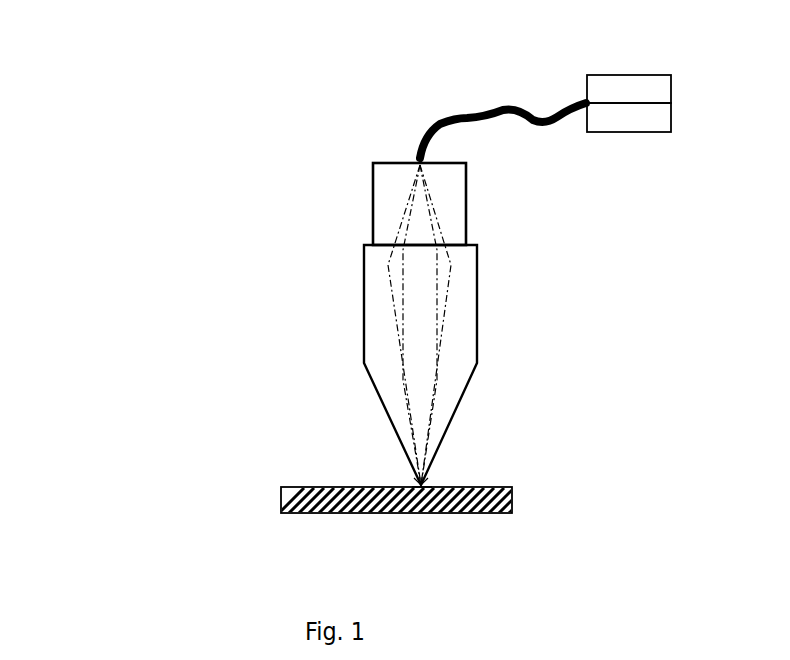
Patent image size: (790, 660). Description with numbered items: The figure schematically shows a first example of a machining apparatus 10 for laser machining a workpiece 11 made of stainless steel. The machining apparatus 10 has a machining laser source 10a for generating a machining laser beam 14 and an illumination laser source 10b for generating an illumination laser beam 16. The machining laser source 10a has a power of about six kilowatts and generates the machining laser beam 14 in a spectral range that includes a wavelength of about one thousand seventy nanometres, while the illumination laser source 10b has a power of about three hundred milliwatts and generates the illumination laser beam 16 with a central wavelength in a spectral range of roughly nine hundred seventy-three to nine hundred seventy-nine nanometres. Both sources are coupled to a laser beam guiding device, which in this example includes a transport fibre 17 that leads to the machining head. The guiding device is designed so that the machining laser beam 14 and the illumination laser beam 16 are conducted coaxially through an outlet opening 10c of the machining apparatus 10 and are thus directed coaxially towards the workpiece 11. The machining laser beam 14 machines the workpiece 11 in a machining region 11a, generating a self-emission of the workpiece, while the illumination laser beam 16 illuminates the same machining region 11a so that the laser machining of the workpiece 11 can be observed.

The machining apparatus 10 is at (165, 122).
The machining laser source 10a is at (612, 75).
The illumination laser source 10b is at (628, 132).
The outlet opening 10c is at (388, 475).
The workpiece 11 is at (512, 500).
The machining region 11a is at (435, 479).
The machining laser beam 14 is at (435, 269).
The illumination laser beam 16 is at (398, 217).
The transport fibre 17 is at (512, 108).